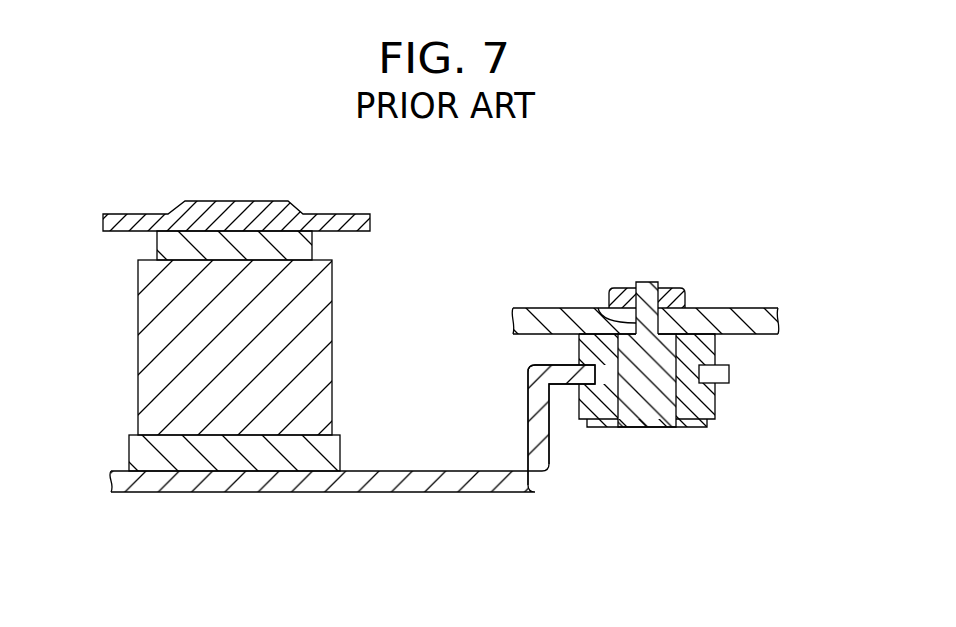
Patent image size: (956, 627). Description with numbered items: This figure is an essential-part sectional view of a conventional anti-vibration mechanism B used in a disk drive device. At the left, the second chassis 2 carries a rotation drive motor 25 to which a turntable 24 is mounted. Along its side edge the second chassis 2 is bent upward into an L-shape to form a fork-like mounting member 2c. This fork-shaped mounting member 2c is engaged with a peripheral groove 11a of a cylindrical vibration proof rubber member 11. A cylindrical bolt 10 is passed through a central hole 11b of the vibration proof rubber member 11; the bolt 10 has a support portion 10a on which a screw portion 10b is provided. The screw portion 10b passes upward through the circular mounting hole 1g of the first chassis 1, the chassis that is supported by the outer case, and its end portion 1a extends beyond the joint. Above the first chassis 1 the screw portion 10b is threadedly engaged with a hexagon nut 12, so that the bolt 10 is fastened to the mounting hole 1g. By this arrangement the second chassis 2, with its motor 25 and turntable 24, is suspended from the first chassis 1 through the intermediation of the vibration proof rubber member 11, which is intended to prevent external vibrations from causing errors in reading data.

The first chassis 1 is at (660, 291).
The circuit board end portion 1a is at (765, 308).
The circular mounting hole 1g is at (598, 308).
The second chassis 2 is at (352, 474).
The mounting member 2c is at (557, 385).
The cylindrical bolt 10 is at (690, 372).
The support portion 10a is at (643, 410).
The screw portion 10b is at (647, 287).
The vibration proof rubber member 11 is at (603, 402).
The peripheral groove 11a is at (697, 372).
The central hole 11b is at (677, 345).
The hexagon nut 12 is at (683, 297).
The turntable 24 is at (335, 213).
The rotation drive motor 25 is at (140, 317).
The anti-vibration mechanism B is at (759, 398).